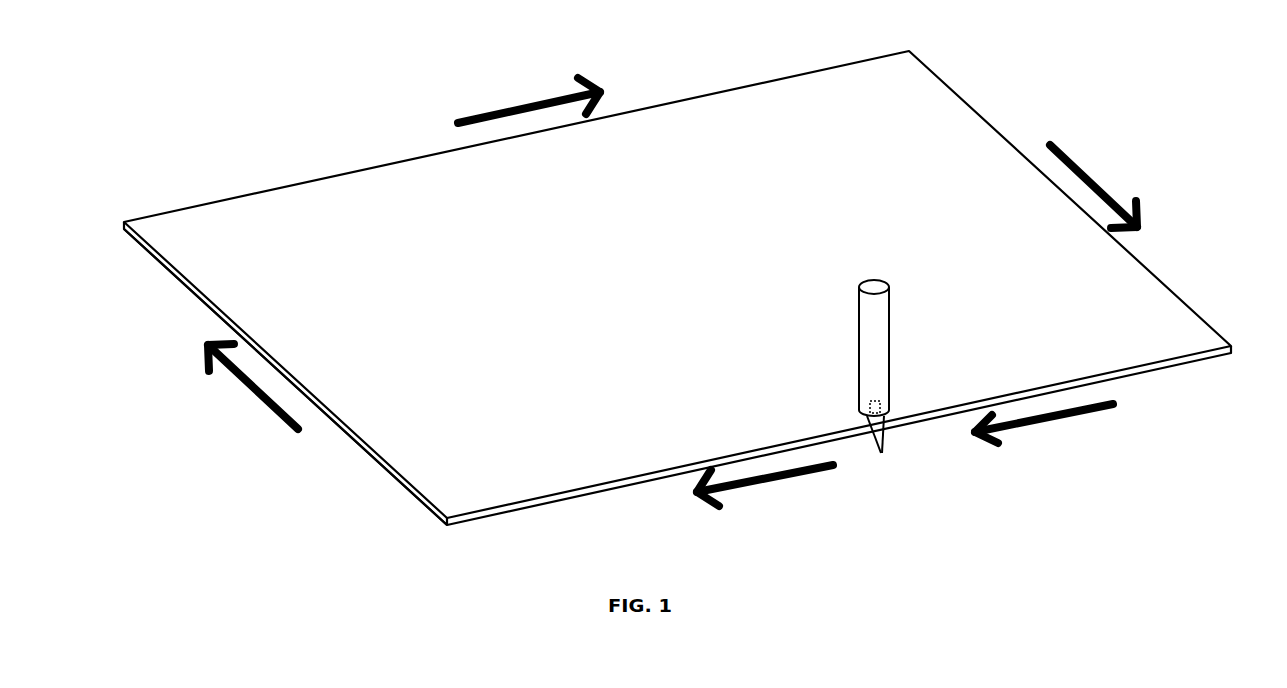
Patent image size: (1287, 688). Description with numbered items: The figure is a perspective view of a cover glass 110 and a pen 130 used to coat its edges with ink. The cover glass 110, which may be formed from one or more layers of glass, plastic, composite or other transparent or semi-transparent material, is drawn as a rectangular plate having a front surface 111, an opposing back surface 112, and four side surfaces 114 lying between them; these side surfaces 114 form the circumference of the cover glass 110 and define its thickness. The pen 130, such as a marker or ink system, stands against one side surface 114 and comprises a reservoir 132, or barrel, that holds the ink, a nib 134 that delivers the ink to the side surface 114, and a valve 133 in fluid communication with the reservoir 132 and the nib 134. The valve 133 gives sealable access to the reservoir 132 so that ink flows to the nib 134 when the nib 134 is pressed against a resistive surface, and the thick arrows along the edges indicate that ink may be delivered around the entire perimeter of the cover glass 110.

The cover glass 110 is at (296, 183).
The front surface 111 is at (668, 283).
The back surface 112 is at (393, 504).
The side surfaces 114 is at (756, 59).
The pen 130 is at (874, 352).
The reservoir 132 is at (893, 357).
The valve 133 is at (868, 400).
The nib 134 is at (884, 452).